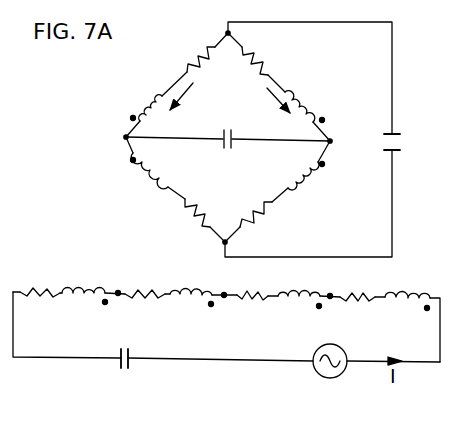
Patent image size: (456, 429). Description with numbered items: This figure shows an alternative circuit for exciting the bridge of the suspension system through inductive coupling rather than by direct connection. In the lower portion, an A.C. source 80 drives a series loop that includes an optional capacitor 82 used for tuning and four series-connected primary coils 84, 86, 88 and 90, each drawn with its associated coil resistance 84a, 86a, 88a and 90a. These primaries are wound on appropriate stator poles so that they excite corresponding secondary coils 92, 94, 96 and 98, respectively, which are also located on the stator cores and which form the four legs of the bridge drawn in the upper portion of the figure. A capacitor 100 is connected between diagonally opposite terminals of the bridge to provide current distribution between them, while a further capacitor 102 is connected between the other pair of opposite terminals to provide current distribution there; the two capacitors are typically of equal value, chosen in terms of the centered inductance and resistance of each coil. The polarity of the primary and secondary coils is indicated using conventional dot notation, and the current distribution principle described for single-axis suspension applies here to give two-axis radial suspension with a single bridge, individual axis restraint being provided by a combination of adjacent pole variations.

The source 80 is at (313, 354).
The capacitor 82 is at (130, 352).
The coil resistance 84a is at (40, 282).
The primary coil 84 is at (85, 286).
The coil resistance 86a is at (145, 283).
The primary coil 86 is at (192, 287).
The coil resistance 88a is at (254, 285).
The primary coil 88 is at (300, 289).
The coil resistance 90a is at (359, 286).
The primary coil 90 is at (407, 291).
The secondary coil 92 is at (300, 96).
The secondary coil 94 is at (305, 180).
The secondary coil 96 is at (155, 180).
The secondary coil 98 is at (152, 98).
The capacitor 100 is at (226, 128).
The capacitor 102 is at (389, 133).